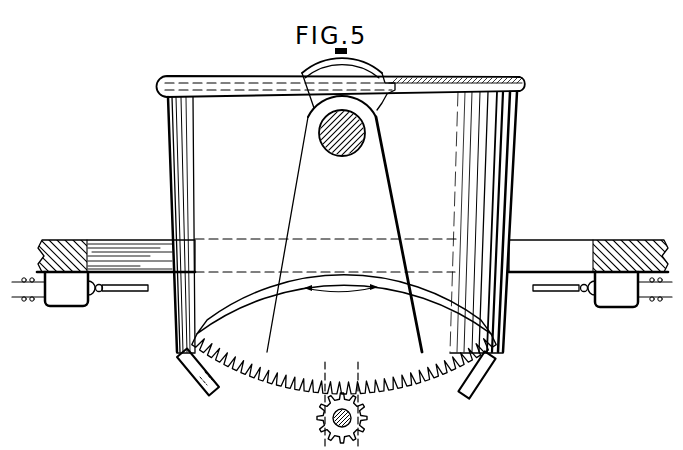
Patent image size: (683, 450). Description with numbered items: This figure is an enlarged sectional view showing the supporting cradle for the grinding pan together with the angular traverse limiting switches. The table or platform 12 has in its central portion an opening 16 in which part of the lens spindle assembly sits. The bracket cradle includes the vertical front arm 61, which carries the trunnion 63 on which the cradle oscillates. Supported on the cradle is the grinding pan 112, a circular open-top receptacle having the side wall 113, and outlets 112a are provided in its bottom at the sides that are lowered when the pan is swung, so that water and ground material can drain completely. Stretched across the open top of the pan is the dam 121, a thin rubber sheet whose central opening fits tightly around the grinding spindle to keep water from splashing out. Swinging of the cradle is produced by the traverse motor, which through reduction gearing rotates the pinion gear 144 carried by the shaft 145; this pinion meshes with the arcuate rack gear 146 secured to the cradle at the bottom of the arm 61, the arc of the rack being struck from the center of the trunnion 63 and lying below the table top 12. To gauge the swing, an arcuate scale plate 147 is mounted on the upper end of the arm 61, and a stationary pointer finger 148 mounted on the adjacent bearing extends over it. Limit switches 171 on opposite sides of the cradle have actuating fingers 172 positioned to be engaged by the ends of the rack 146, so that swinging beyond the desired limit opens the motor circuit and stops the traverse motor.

The table or platform 12 is at (60, 243).
The opening 16 is at (556, 247).
The front arm 61 is at (388, 217).
The trunnion 63 is at (352, 140).
The grinding pan 112 is at (521, 156).
The outlets 112a is at (199, 369).
The side wall 113 is at (498, 128).
The dam 121 is at (230, 71).
The pinion gear 144 is at (366, 426).
The shaft 145 is at (333, 421).
The arcuate rack gear 146 is at (295, 376).
The arcuate scale plate 147 is at (334, 51).
The stationary pointer finger 148 is at (372, 66).
The limit switches 171 is at (70, 307).
The actuating fingers 172 is at (133, 292).